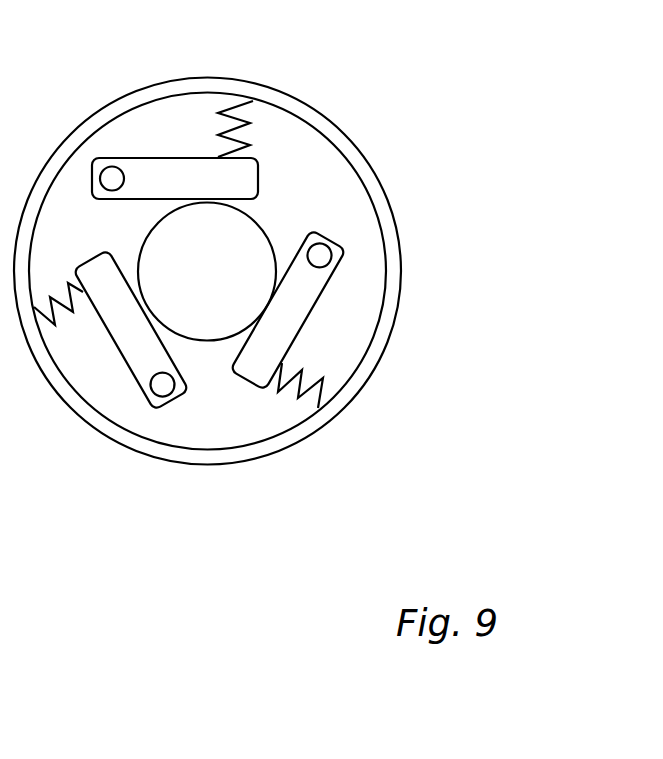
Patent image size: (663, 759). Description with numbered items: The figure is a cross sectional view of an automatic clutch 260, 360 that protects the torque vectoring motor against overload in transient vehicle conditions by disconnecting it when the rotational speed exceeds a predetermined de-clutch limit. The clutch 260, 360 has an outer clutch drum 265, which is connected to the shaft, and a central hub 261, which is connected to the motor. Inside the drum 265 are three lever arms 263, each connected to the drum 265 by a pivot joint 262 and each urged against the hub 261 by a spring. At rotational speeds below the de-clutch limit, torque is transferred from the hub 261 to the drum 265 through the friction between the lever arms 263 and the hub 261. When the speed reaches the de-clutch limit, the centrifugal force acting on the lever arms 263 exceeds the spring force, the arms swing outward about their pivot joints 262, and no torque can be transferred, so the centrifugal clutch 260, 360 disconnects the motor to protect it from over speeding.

The automatic clutch 260 is at (306, 45).
The automatic clutch 360 is at (260, 271).
The hub 261 is at (188, 282).
The pivot joints 262 is at (92, 178).
The lever arms 263 is at (209, 157).
The clutch drum 265 is at (399, 241).